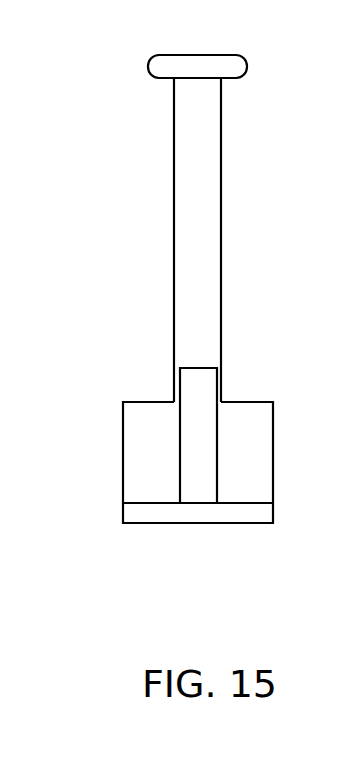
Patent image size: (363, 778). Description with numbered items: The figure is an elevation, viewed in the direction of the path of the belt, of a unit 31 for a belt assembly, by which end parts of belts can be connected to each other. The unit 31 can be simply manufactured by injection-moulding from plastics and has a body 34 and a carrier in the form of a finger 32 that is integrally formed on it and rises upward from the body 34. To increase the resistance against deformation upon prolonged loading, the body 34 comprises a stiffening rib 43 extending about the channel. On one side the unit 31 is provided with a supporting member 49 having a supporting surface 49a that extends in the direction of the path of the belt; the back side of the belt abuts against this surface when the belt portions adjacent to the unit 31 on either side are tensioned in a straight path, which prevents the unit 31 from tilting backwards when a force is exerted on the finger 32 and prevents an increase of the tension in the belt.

The unit 31 is at (138, 171).
The finger 32 is at (208, 108).
The body 34 is at (245, 401).
The stiffening rib 43 is at (198, 367).
The supporting member 49 is at (253, 502).
The supporting surface 49a is at (207, 524).